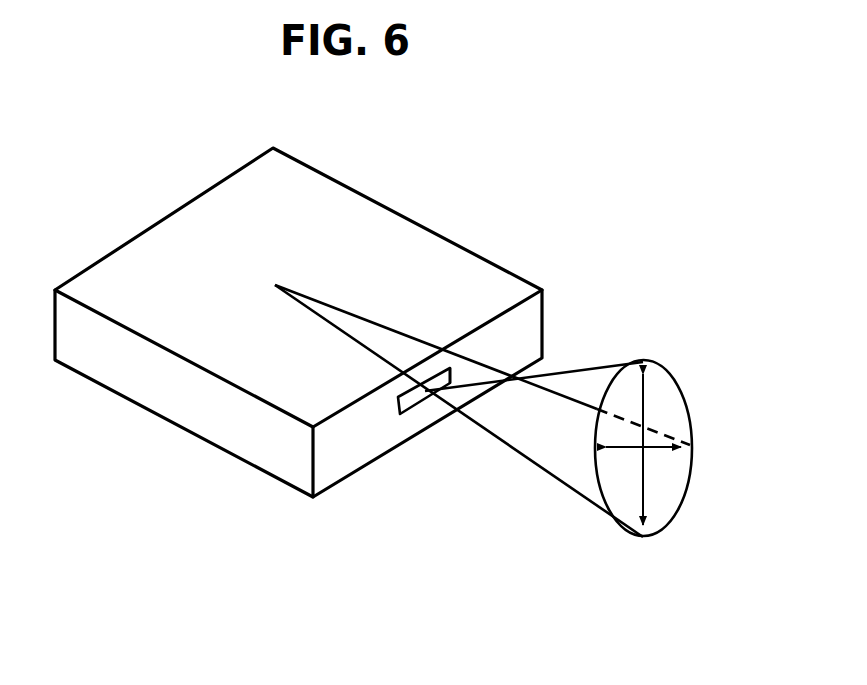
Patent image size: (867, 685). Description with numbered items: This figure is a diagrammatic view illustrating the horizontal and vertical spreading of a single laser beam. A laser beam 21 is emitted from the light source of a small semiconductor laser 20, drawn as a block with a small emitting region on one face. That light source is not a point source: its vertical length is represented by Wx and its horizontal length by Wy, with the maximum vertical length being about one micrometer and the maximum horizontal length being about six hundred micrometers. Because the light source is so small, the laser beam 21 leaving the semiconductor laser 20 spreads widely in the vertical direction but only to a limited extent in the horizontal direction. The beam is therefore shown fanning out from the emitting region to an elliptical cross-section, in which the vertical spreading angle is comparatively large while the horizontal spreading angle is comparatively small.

The small semiconductor laser 20 is at (475, 250).
The laser beam 21 is at (680, 366).
The vertical length of the light source Wx is at (398, 410).
The horizontal length of the light source Wy is at (422, 396).